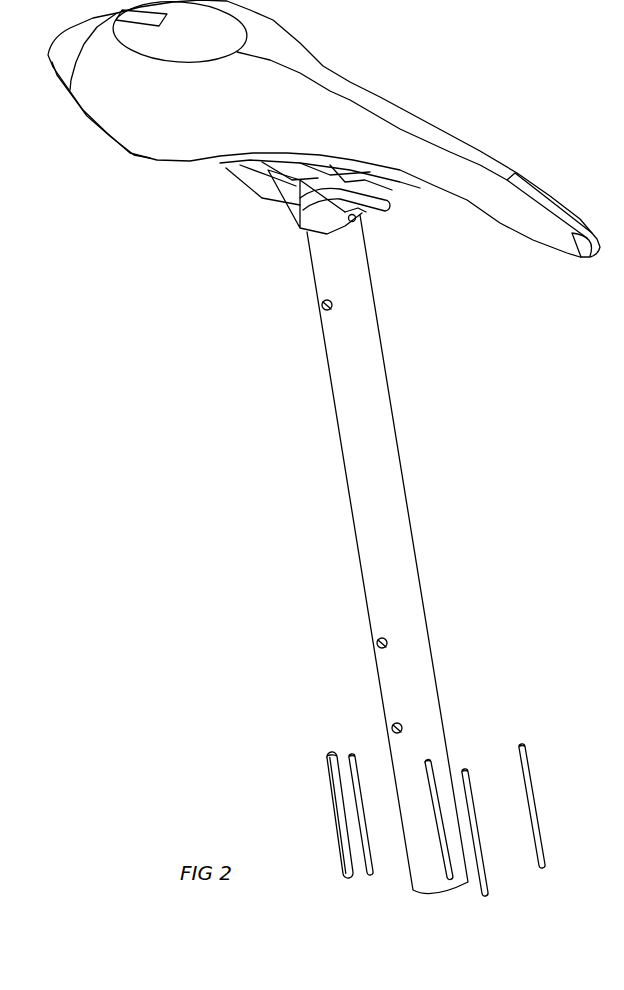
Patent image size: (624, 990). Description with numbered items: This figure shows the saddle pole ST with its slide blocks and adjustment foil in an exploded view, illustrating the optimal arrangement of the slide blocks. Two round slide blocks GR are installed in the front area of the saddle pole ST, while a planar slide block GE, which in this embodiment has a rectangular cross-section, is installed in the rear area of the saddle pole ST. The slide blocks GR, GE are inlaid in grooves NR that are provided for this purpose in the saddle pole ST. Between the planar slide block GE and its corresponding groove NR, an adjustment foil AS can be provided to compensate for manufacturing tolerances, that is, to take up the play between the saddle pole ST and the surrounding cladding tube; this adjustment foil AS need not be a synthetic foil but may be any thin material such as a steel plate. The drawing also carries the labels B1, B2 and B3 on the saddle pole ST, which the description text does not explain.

The saddle pole ST is at (408, 499).
The first fastening hole B1 is at (320, 305).
The second fastening hole B2 is at (376, 643).
The third fastening hole B3 is at (391, 723).
The planar slide block GE is at (327, 776).
The adjustment foil AS is at (350, 755).
The groove NR is at (435, 768).
The round slide block GR is at (537, 783).